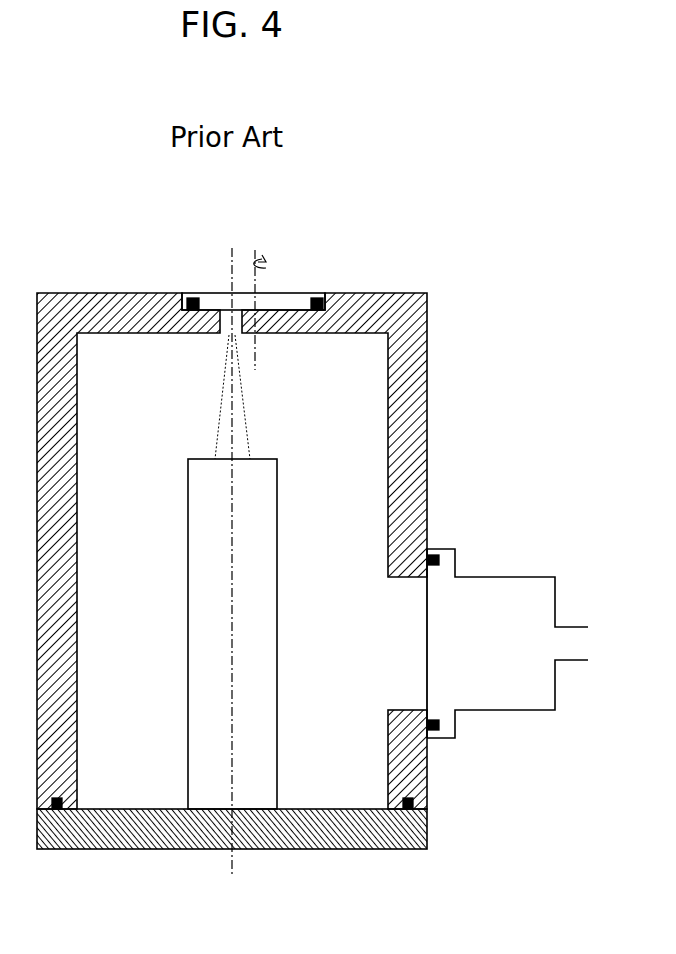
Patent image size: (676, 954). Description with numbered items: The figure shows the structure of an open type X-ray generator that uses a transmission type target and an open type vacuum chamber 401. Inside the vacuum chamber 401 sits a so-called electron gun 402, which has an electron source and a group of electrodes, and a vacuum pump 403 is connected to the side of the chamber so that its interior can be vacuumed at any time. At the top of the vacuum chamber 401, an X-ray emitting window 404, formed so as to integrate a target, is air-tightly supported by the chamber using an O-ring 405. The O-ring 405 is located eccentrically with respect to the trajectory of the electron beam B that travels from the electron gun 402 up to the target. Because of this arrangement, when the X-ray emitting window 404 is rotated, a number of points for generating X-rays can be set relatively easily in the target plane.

The vacuum chamber 401 is at (427, 418).
The electron gun 402 is at (277, 631).
The vacuum pump 403 is at (507, 577).
The X-ray emitting window 404 is at (282, 293).
The O-ring 405 is at (193, 297).
The electron beam B is at (222, 405).